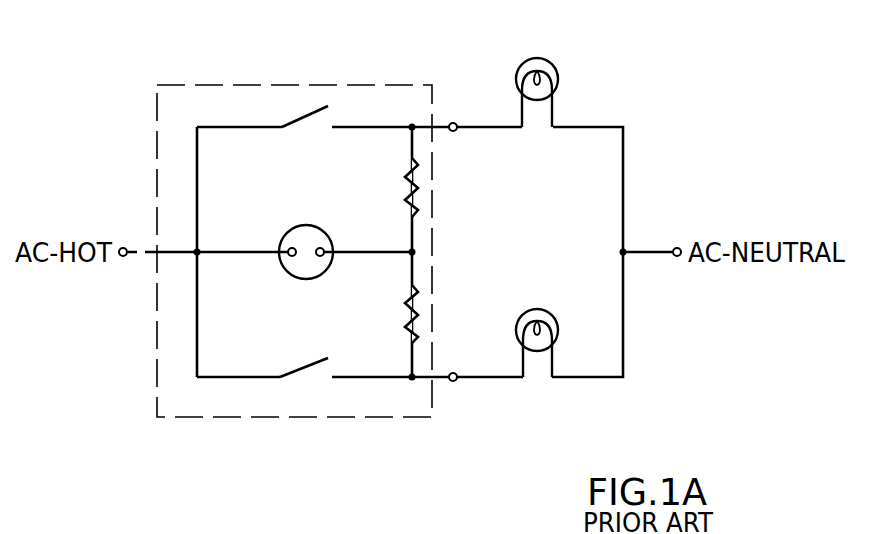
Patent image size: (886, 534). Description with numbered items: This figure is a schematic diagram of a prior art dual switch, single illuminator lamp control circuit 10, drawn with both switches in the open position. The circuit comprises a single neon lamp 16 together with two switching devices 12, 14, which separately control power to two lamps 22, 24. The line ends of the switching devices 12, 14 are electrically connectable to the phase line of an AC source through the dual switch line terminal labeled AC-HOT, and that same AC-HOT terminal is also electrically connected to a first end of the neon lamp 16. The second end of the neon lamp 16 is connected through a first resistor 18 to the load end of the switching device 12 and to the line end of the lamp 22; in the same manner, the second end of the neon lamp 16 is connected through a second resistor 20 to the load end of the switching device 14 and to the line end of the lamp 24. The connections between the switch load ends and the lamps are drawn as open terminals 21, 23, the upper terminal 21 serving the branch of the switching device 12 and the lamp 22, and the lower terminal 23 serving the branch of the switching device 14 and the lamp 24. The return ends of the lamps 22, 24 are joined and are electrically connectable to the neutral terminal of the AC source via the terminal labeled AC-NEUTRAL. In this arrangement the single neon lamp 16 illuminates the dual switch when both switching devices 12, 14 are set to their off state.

The lamp control circuit 10 is at (250, 82).
The switching device 12 is at (303, 120).
The switching device 14 is at (297, 376).
The neon lamp 16 is at (300, 226).
The first resistor 18 is at (418, 189).
The second resistor 20 is at (417, 313).
The upper output terminal 21 is at (453, 121).
The lamp 22 is at (560, 82).
The lower output terminal 23 is at (455, 382).
The lamp 24 is at (558, 320).